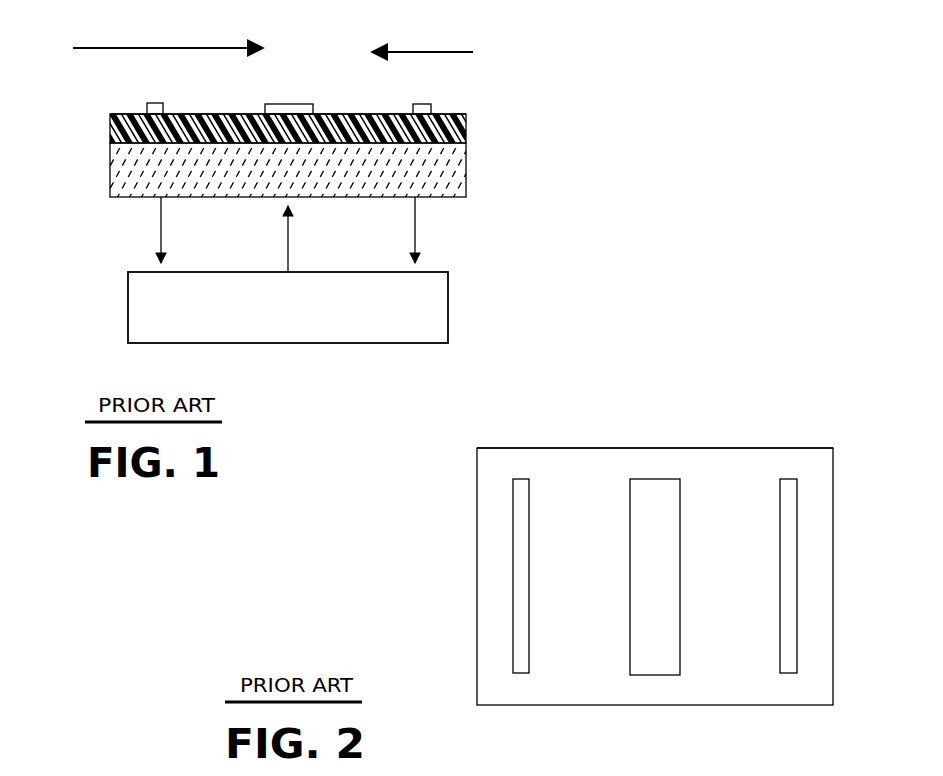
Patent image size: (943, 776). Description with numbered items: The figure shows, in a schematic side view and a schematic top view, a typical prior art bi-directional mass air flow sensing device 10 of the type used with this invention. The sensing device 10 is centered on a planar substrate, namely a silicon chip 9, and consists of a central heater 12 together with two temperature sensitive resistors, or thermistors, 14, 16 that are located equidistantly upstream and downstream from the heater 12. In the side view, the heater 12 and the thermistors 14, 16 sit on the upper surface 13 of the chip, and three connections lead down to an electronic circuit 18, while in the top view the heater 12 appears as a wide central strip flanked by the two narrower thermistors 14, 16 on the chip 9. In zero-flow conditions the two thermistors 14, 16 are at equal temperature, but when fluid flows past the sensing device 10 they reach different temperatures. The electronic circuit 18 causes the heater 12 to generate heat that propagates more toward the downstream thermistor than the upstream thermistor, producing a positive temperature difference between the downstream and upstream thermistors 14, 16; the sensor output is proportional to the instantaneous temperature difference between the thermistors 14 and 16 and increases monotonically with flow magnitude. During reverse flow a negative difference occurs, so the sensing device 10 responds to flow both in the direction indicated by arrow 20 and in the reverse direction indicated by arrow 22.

In FIG. 1, the silicon chip 9 is at (115, 125).
In FIG. 1, the sensing device 10 is at (106, 169).
In FIG. 2, the sensing device 10 is at (821, 440).
In FIG. 1, the central heater 12 is at (283, 104).
In FIG. 2, the central heater 12 is at (657, 663).
In FIG. 1, the surface of substrate 13 is at (463, 112).
In FIG. 2, the surface of substrate 13 is at (605, 468).
In FIG. 1, the temperature sensitive resistor 14 is at (157, 103).
In FIG. 2, the temperature sensitive resistor 14 is at (520, 668).
In FIG. 1, the temperature sensitive resistor 16 is at (423, 104).
In FIG. 2, the temperature sensitive resistor 16 is at (789, 668).
In FIG. 1, the electronic circuit 18 is at (135, 295).
In FIG. 1, the arrow 20 is at (108, 50).
In FIG. 1, the arrow 22 is at (442, 52).